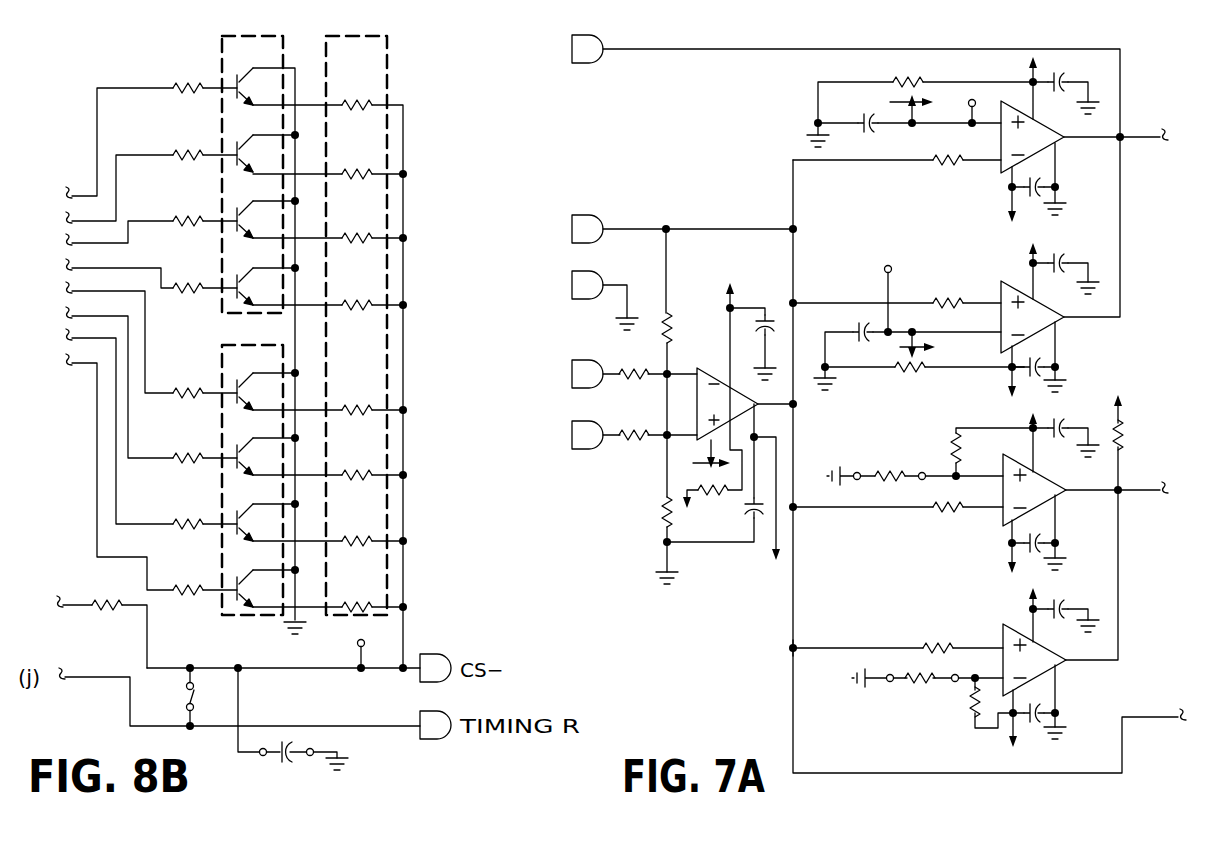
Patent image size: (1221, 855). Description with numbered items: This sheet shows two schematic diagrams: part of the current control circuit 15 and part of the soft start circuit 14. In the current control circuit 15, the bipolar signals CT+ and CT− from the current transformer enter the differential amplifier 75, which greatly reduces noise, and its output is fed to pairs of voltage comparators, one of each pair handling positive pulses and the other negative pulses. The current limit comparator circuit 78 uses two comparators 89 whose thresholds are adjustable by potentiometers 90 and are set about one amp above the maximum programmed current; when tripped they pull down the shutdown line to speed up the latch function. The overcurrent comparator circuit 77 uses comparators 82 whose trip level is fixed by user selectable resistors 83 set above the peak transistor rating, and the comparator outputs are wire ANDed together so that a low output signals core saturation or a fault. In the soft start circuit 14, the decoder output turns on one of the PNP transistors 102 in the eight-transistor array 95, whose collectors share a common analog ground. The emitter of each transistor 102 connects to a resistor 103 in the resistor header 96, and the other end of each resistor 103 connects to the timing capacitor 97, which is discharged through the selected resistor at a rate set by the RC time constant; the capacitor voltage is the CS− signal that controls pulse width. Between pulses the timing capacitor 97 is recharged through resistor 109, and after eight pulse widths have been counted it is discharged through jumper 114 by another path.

In FIG. 8B, the soft start circuit 14 is at (128, 55).
In FIG. 8B, the transistor array 95 is at (220, 70).
In FIG. 8B, the PNP transistor 102 is at (266, 335).
In FIG. 8B, the resistor 103 is at (356, 101).
In FIG. 8B, the resistor header 96 is at (392, 81).
In FIG. 8B, the resistor 109 is at (118, 608).
In FIG. 8B, the jumper 114 is at (210, 700).
In FIG. 8B, the timing capacitor 97 is at (270, 760).
In FIG. 7A, the current control circuit 15 is at (1152, 84).
In FIG. 7A, the current limit comparator circuit 78 is at (760, 146).
In FIG. 7A, the differential amplifier 75 is at (695, 392).
In FIG. 7A, the comparator 89 is at (999, 165).
In FIG. 7A, the potentiometer 90 is at (915, 92).
In FIG. 7A, the comparator 82 is at (1003, 515).
In FIG. 7A, the resistor 83 is at (916, 452).
In FIG. 7A, the overcurrent comparator circuit 77 is at (760, 652).